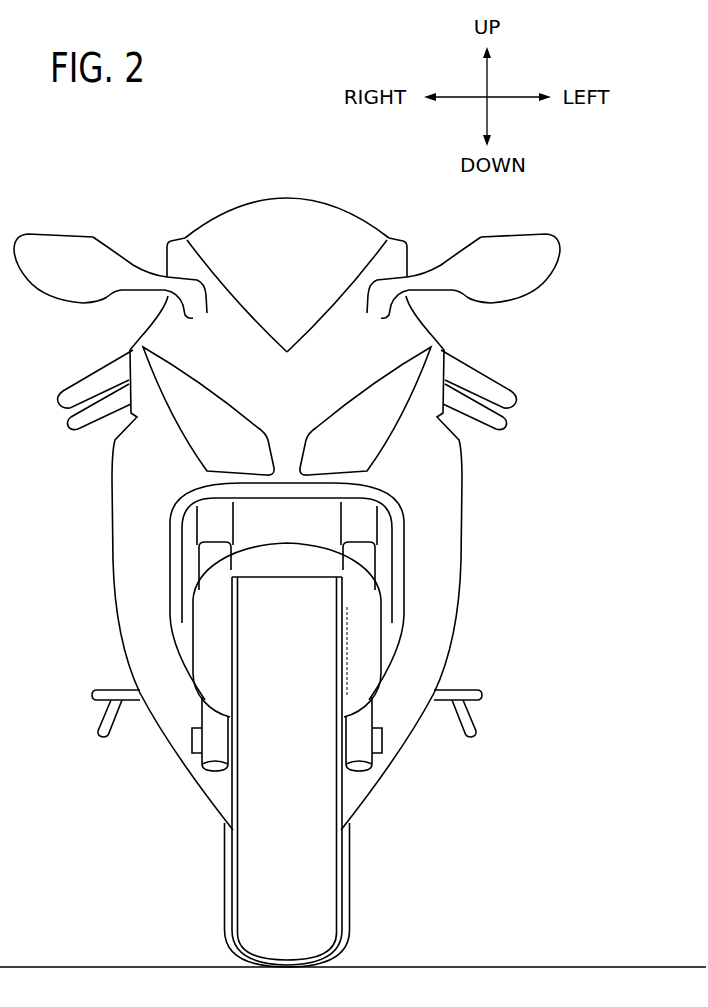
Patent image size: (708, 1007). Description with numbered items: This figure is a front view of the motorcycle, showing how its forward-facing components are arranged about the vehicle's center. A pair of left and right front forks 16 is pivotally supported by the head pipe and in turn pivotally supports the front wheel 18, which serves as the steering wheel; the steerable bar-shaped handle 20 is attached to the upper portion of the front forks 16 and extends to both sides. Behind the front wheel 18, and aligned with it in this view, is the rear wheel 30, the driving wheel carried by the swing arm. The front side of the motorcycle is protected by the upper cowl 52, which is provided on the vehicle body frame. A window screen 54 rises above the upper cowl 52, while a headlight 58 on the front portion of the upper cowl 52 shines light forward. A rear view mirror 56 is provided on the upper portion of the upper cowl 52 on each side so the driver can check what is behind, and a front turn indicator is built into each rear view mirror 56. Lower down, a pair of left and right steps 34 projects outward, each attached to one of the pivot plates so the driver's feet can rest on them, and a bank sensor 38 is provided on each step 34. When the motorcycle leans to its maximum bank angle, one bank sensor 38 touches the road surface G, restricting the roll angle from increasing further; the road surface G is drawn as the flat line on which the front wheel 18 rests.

The front fork 16 is at (210, 565).
The front wheel 18 is at (313, 885).
The bar-shaped handle 20 is at (88, 384).
The rear wheel 30 is at (349, 910).
The step 34 is at (103, 690).
The bank sensor 38 is at (100, 722).
The upper cowl 52 is at (372, 348).
The window screen 54 is at (312, 212).
The rear view mirror 56 is at (58, 248).
The headlight 58 is at (200, 435).
The road surface G is at (490, 967).